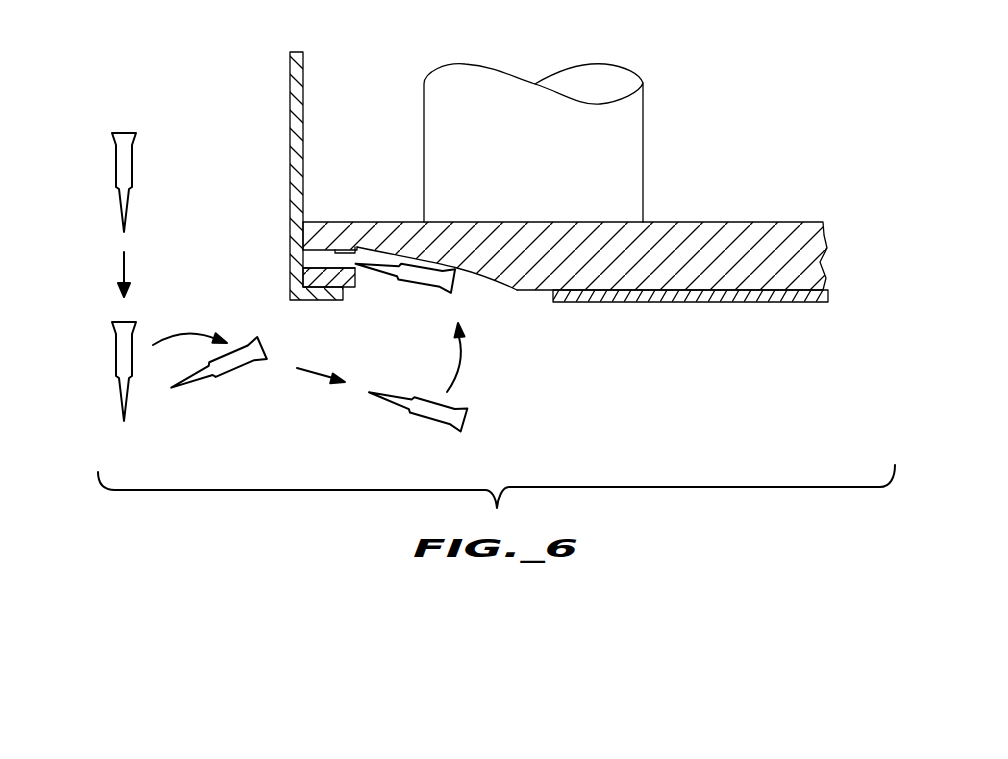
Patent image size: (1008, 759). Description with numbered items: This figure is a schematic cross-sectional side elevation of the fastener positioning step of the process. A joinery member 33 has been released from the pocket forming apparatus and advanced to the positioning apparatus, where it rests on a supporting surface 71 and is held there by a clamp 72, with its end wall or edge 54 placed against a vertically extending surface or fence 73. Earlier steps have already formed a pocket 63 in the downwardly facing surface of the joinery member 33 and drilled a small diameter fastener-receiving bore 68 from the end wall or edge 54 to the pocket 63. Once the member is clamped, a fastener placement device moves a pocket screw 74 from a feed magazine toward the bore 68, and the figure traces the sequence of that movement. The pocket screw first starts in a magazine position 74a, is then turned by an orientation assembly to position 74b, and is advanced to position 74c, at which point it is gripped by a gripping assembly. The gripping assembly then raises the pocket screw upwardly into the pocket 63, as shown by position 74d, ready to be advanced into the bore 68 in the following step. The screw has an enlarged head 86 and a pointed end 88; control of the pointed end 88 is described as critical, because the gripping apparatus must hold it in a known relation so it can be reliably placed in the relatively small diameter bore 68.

The joinery member 33 is at (672, 221).
The end wall or edge 54 is at (292, 268).
The pocket 63 is at (475, 270).
The fastener-receiving bore 68 is at (348, 250).
The supporting surface 71 is at (692, 284).
The clamp 72 is at (645, 107).
The vertically extending surface or fence 73 is at (303, 87).
The pocket screw 74 is at (117, 158).
The magazine position 74a is at (117, 345).
The oriented position 74b is at (233, 368).
The gripping position 74c is at (425, 415).
The pocket position 74d is at (415, 276).
The enlarged head 86 is at (457, 269).
The pointed end 88 is at (362, 268).